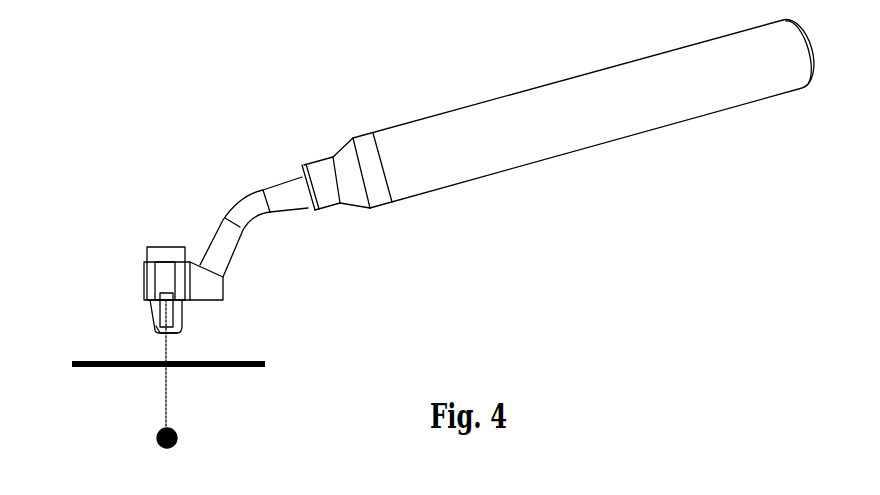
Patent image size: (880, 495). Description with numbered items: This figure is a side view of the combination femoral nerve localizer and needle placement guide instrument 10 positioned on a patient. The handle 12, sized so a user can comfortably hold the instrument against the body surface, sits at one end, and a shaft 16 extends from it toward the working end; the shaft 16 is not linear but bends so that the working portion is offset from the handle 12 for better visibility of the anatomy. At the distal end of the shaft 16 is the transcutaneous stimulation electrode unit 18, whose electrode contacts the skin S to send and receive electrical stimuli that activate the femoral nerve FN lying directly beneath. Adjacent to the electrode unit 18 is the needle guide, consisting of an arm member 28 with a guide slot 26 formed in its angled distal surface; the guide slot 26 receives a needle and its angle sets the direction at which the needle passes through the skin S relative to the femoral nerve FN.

The combination femoral nerve localizer and needle placement guide instrument 10 is at (296, 130).
The handle 12 is at (575, 177).
The shaft 16 is at (243, 228).
The transcutaneous stimulation electrode unit 18 is at (203, 342).
The guide slot 26 is at (163, 332).
The arm member 28 is at (163, 302).
The skin S is at (87, 367).
The femoral nerve FN is at (177, 440).